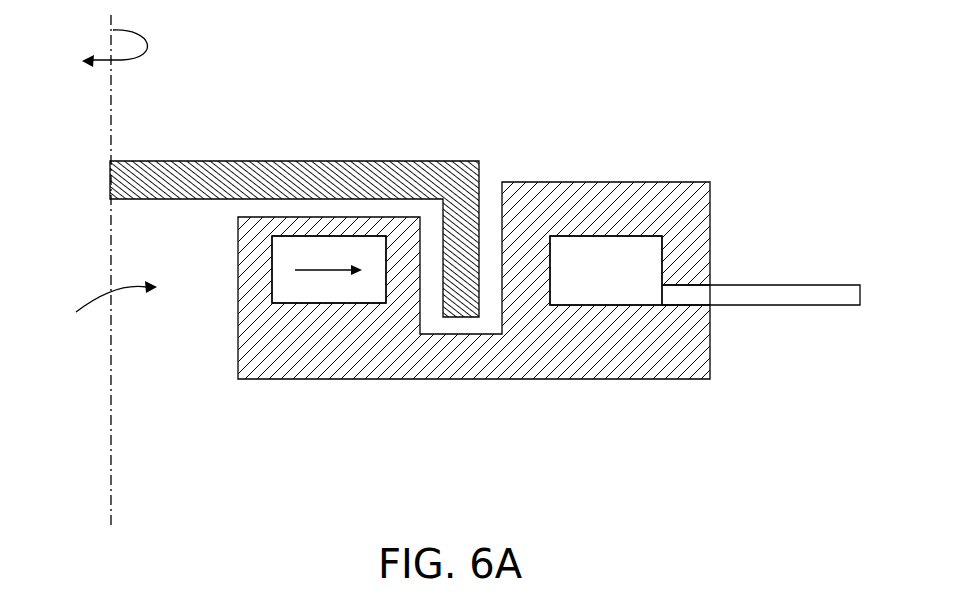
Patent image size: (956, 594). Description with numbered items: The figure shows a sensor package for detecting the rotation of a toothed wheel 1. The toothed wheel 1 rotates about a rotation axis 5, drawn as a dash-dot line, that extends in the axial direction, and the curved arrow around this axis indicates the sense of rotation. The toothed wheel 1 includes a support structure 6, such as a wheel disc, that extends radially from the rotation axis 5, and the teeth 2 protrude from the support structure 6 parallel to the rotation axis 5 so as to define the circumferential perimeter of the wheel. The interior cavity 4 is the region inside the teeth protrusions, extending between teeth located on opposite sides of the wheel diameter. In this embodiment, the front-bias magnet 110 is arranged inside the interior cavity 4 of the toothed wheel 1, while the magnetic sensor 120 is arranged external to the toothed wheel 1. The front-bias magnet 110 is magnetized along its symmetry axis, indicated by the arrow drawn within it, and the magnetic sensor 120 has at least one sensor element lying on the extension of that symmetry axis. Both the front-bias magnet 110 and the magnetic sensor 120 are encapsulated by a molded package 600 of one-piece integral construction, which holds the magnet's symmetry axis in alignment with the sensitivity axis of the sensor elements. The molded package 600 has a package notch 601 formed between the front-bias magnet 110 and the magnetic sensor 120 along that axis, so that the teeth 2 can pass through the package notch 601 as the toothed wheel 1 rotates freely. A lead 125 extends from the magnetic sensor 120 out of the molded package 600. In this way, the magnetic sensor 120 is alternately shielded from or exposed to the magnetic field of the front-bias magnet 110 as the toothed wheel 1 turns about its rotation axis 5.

The toothed wheel 1 is at (285, 138).
The teeth 2 is at (480, 173).
The interior cavity 4 is at (108, 303).
The rotation axis 5 is at (110, 44).
The support structure 6 is at (344, 161).
The front-bias magnet 110 is at (272, 268).
The magnetic sensor 120 is at (663, 256).
The sensor cable 125 is at (812, 286).
The molded package 600 is at (710, 353).
The package notch 601 is at (491, 243).